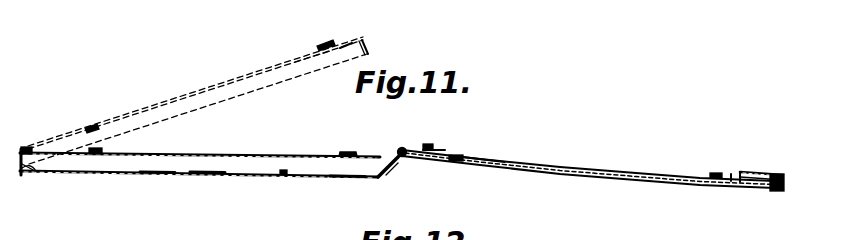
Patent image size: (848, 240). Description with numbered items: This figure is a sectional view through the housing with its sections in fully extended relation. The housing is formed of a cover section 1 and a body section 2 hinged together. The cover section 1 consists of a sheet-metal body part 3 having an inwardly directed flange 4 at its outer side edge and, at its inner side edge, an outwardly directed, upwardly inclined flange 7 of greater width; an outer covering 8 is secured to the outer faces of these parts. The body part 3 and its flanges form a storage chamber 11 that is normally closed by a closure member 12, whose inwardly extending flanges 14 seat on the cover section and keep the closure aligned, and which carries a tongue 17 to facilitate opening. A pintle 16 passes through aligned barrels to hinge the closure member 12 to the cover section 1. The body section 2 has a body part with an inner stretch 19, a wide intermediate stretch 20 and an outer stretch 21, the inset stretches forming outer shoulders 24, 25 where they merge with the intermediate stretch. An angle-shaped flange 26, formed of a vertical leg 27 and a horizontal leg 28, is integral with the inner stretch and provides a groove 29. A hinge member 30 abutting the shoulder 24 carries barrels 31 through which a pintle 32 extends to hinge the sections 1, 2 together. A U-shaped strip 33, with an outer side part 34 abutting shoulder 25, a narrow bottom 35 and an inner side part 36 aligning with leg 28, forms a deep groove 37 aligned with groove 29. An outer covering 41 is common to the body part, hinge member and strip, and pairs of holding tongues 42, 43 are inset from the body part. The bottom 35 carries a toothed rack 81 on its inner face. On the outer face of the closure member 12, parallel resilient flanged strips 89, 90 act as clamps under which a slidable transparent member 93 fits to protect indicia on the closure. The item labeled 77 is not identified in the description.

The cover section 1 is at (281, 176).
The body section 2 is at (653, 184).
The body part 3 is at (209, 177).
The flange 4 is at (30, 175).
The inclined flange 7 is at (394, 157).
The outer covering 8 is at (342, 179).
The storage chamber 11 is at (161, 177).
The closure member 12 is at (346, 44).
The flange 14 is at (371, 48).
The pintle 16 is at (29, 148).
The tongue 17 is at (369, 44).
The inner stretch 19 is at (460, 155).
The intermediate stretch 20 is at (621, 181).
The outer stretch 21 is at (732, 175).
The outer shoulder 24 is at (454, 164).
The outer shoulder 25 is at (721, 188).
The angle-shaped flange 26 is at (427, 144).
The vertical leg 27 is at (417, 161).
The horizontal leg 28 is at (432, 148).
The groove 29 is at (452, 154).
The hinge member 30 is at (403, 149).
The barrels 31 is at (398, 150).
The pintle 32 is at (400, 150).
The strip 33 is at (753, 181).
The outer side part 34 is at (754, 173).
The bottom 35 is at (779, 175).
The inner side part 36 is at (760, 173).
The deep groove 37 is at (741, 174).
The outer covering 41 is at (688, 187).
The holding tongues 42 is at (487, 146).
The holding tongues 43 is at (716, 173).
The track 77 is at (598, 167).
The toothed rack 81 is at (788, 186).
The resilient flanged strip 89 is at (93, 149).
The resilient flanged strip 90 is at (325, 46).
The transparent member 93 is at (264, 72).